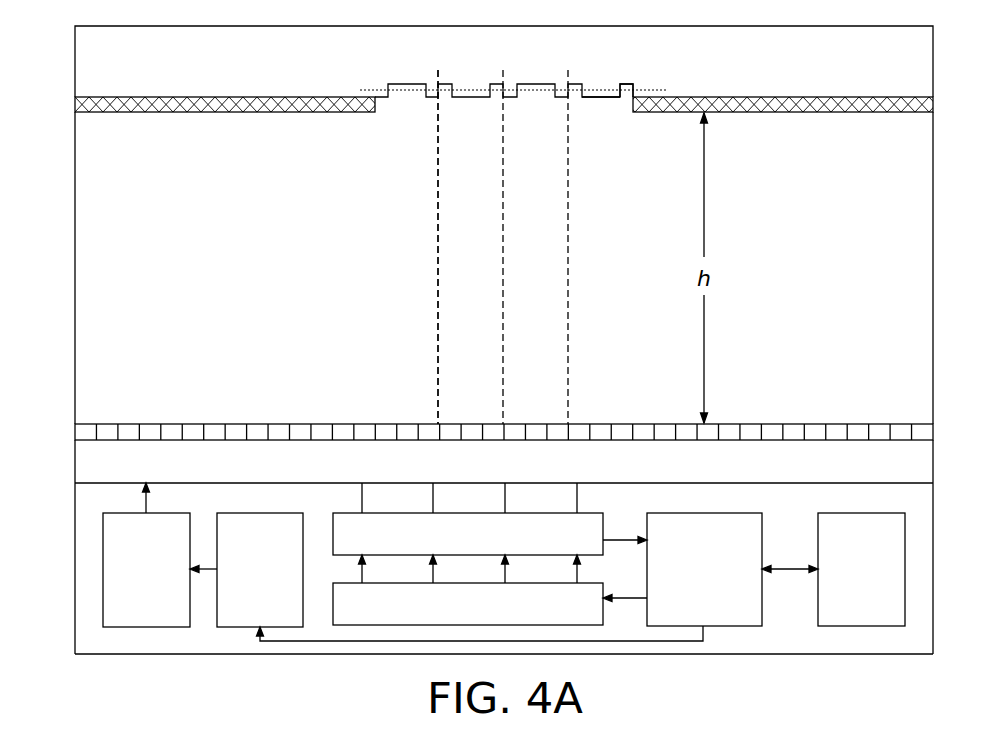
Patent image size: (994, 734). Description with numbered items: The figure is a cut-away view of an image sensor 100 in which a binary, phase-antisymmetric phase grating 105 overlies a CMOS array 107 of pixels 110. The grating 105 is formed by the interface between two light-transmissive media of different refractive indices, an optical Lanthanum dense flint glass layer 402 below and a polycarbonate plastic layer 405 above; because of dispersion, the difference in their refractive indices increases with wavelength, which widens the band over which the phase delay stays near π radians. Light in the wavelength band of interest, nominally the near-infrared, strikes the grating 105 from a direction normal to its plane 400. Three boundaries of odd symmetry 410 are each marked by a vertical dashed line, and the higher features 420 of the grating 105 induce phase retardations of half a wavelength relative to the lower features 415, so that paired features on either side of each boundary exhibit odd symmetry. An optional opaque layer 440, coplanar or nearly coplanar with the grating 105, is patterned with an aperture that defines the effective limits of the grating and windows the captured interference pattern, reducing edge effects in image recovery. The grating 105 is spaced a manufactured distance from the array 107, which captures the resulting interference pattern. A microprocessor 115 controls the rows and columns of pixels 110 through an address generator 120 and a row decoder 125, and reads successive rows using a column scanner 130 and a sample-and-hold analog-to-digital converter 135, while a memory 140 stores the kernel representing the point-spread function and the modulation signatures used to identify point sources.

The image sensor 100 is at (88, 733).
The phase grating 105 is at (415, 133).
The array 107 is at (578, 480).
The pixels 110 is at (232, 424).
The microprocessor 115 is at (688, 595).
The address generator 120 is at (244, 595).
The row decoder 125 is at (130, 595).
The column scanner 130 is at (560, 613).
The sample-and-hold analog-to-digital converter 135 is at (567, 544).
The memory 140 is at (845, 595).
The plane of grating 400 is at (374, 89).
The Lanthanum dense flint glass layer 402 is at (258, 266).
The polycarbonate plastic layer 405 is at (175, 63).
The boundaries of odd symmetry 410 is at (504, 225).
The lower features 415 is at (606, 99).
The higher features 420 is at (625, 84).
The opaque layer 440 is at (188, 113).